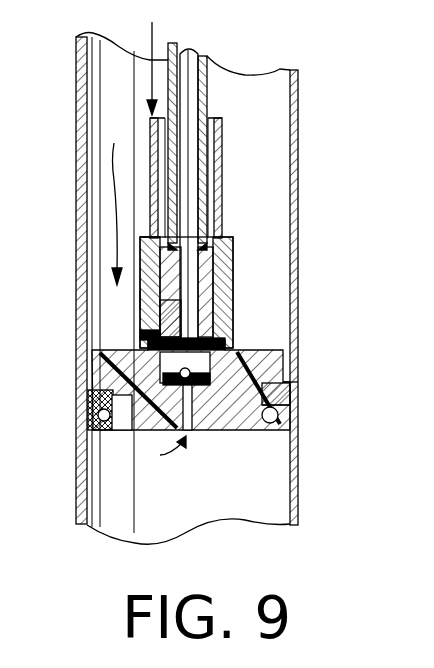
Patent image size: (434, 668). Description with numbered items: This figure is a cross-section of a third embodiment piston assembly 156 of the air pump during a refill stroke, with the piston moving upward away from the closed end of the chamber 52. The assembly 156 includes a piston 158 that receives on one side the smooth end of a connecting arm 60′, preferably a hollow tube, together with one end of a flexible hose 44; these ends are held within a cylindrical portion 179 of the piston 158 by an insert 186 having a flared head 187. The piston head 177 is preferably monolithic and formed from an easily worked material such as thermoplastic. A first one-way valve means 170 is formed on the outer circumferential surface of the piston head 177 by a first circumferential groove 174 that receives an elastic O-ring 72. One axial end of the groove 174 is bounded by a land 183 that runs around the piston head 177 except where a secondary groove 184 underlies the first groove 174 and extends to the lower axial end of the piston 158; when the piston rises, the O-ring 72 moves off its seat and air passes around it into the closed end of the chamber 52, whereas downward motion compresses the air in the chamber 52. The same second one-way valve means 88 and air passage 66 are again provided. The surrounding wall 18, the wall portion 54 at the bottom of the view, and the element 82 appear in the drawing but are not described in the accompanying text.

The outer tube 18 is at (80, 205).
The flexible hose 44 is at (207, 92).
The chamber 52 is at (262, 486).
The lower body portion 54 is at (210, 520).
The connecting arm 60′ is at (221, 150).
The air passage 66 is at (194, 60).
The O-ring 72 is at (303, 405).
The clamp 82 is at (80, 393).
The second one-way valve means 88 is at (150, 334).
The piston assembly 156 is at (232, 230).
The piston 158 is at (234, 260).
The first one-way valve means 170 is at (290, 387).
The first circumferential groove 174 is at (300, 434).
The piston head 177 is at (244, 355).
The cylindrical portion 179 is at (145, 302).
The land 183 is at (300, 420).
The secondary groove 184 is at (137, 432).
The insert 186 is at (223, 304).
The flared head 187 is at (148, 258).